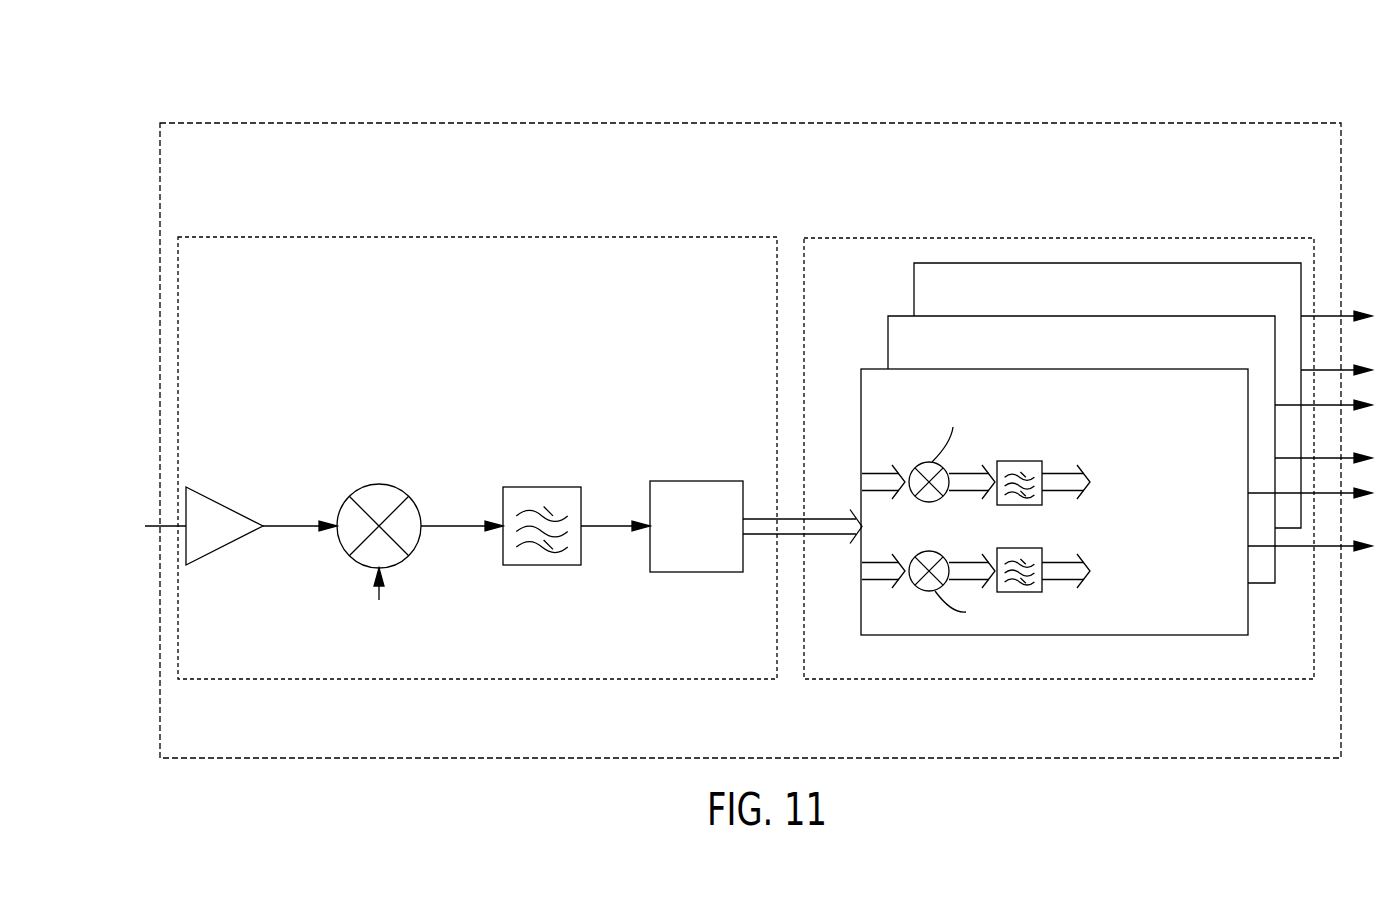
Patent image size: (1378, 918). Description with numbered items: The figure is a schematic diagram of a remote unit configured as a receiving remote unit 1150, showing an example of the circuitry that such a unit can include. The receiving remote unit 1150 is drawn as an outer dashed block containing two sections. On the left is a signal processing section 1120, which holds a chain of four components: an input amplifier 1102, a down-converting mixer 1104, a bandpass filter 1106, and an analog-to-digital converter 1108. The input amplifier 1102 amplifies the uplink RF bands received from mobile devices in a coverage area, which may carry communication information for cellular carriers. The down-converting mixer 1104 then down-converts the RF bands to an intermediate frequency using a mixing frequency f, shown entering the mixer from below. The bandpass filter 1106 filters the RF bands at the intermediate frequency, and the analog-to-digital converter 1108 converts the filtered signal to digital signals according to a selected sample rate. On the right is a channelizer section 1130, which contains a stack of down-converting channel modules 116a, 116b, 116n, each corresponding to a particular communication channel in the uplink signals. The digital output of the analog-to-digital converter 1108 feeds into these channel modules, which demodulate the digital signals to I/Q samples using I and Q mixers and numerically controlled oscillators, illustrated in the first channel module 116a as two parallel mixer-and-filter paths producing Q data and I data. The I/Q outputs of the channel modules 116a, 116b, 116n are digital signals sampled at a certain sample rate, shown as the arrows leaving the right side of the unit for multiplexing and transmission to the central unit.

The receiving remote unit 1150 is at (190, 122).
The signal processing section 1120 is at (214, 236).
The channelizer section 1130 is at (840, 236).
The input amplifier 1102 is at (225, 500).
The down-converting mixer 1104 is at (398, 487).
The bandpass filter 1106 is at (554, 486).
The analog-to-digital converter 1108 is at (719, 480).
The down-converting channel module 116a is at (876, 369).
The down-converting channel module 116b is at (900, 316).
The down-converting channel module 116n is at (927, 262).